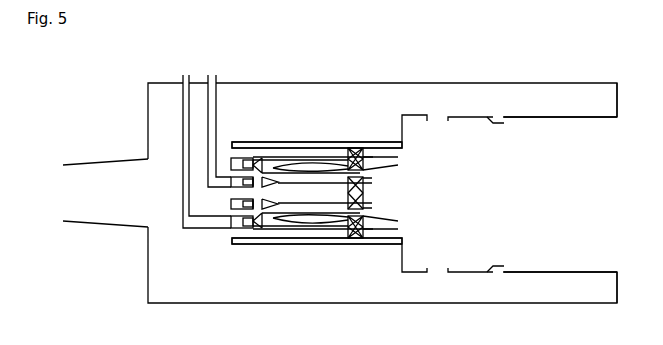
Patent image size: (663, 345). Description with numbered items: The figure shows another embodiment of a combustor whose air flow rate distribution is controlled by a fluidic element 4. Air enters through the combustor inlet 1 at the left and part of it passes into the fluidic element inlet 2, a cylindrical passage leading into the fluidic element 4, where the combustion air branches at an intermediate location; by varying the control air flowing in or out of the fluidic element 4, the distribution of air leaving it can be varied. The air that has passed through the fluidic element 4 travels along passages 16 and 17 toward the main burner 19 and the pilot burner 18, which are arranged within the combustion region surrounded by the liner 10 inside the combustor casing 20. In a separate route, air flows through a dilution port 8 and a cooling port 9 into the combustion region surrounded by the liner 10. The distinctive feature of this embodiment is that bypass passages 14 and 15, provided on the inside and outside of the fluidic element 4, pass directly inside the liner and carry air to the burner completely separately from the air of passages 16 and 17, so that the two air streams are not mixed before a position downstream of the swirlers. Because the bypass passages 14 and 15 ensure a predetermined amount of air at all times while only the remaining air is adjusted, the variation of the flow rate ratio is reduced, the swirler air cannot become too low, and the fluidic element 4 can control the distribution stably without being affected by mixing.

The combustor inlet 1 is at (105, 193).
The fluidic element inlet 2 is at (241, 222).
The fluidic element 4 is at (272, 244).
The dilution port 8 is at (447, 123).
The cooling port 9 is at (490, 118).
The liner 10 is at (545, 117).
The passage 14 is at (259, 157).
The passage 15 is at (232, 187).
The passage 16 is at (317, 159).
The passage 17 is at (333, 170).
The pilot burner 18 is at (403, 193).
The main burner 19 is at (400, 163).
The combustor casing 20 is at (588, 88).